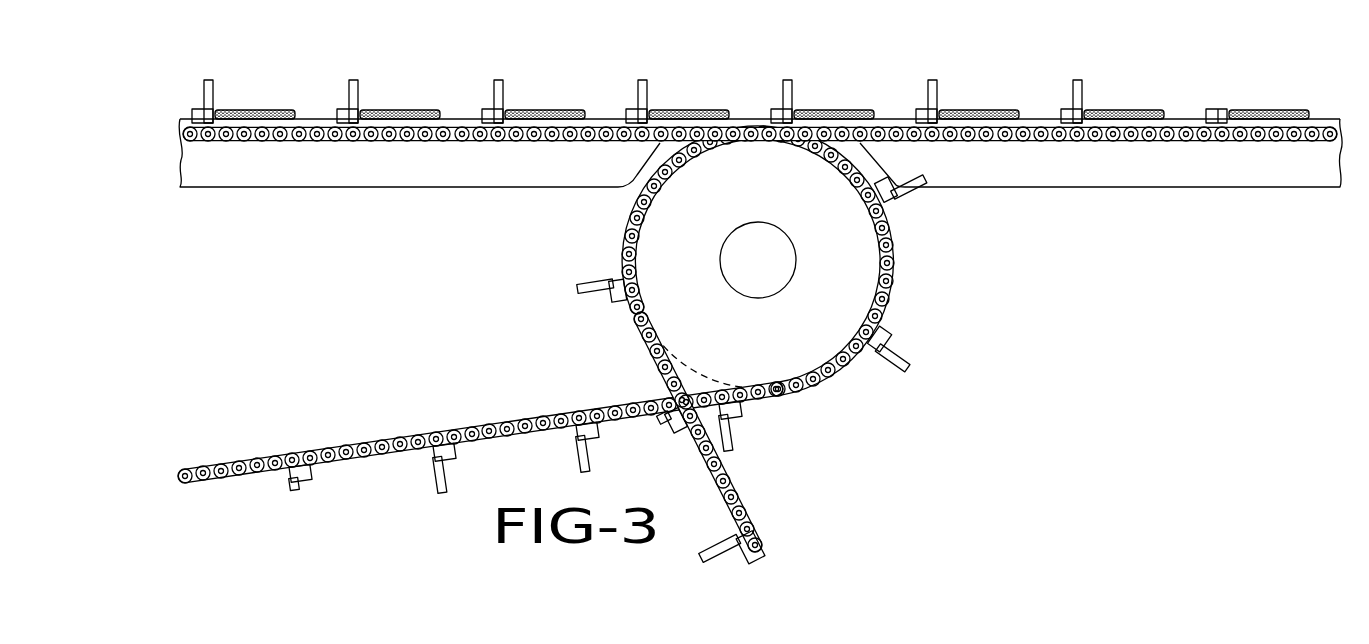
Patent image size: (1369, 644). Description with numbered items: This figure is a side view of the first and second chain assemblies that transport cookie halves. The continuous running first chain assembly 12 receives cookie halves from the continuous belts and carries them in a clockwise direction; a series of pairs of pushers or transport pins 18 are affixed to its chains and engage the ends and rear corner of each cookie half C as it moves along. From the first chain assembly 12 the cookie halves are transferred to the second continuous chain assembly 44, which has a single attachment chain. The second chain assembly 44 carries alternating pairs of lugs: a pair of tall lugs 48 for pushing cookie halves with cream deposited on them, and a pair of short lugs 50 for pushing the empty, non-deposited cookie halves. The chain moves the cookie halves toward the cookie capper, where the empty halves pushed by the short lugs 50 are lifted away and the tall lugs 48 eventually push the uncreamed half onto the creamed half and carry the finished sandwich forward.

The first chain assembly 12 is at (452, 121).
The transport pins 18 is at (499, 82).
The second continuous chain assembly 44 is at (1035, 119).
The tall lugs 48 is at (1082, 80).
The short lugs 50 is at (925, 110).
The cookie half C is at (241, 108).